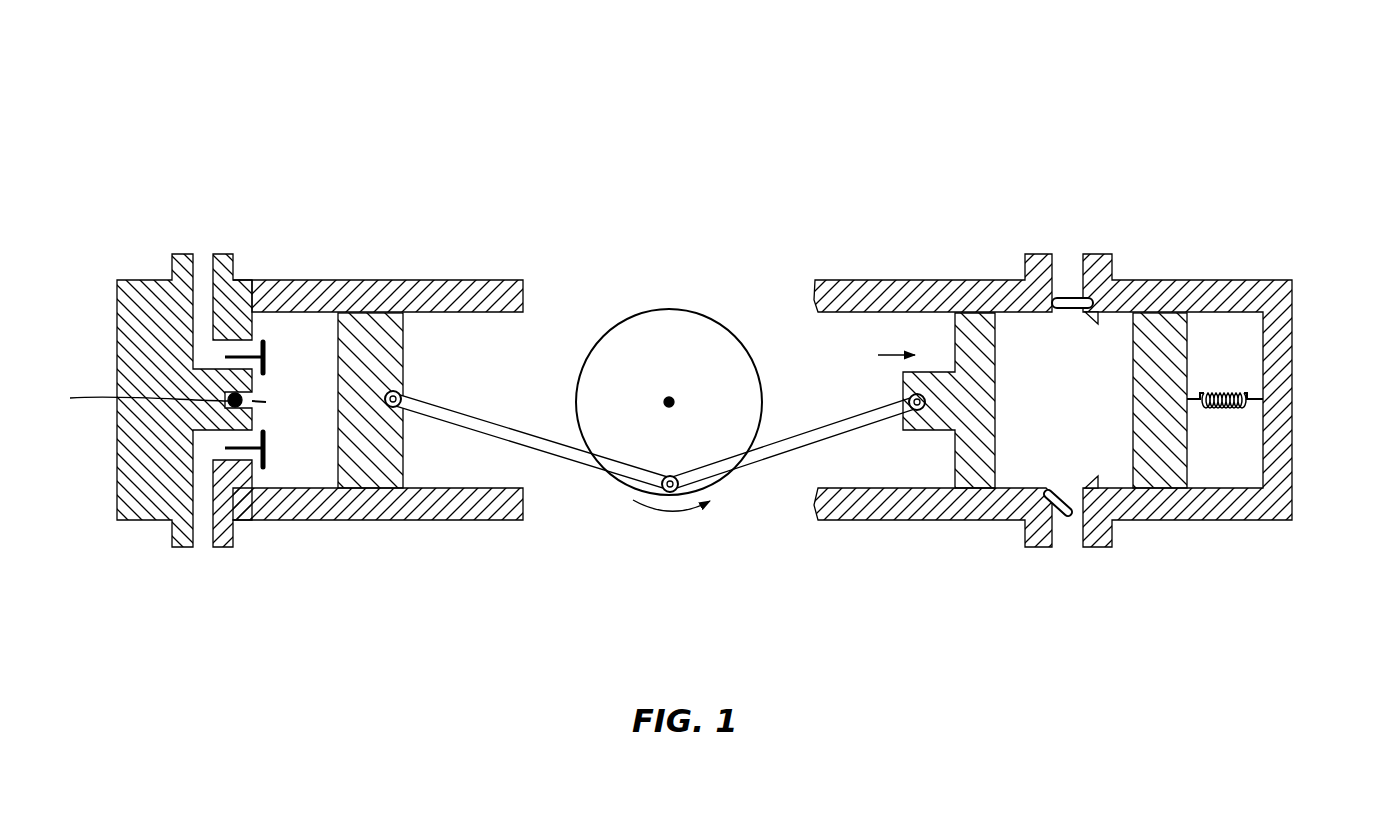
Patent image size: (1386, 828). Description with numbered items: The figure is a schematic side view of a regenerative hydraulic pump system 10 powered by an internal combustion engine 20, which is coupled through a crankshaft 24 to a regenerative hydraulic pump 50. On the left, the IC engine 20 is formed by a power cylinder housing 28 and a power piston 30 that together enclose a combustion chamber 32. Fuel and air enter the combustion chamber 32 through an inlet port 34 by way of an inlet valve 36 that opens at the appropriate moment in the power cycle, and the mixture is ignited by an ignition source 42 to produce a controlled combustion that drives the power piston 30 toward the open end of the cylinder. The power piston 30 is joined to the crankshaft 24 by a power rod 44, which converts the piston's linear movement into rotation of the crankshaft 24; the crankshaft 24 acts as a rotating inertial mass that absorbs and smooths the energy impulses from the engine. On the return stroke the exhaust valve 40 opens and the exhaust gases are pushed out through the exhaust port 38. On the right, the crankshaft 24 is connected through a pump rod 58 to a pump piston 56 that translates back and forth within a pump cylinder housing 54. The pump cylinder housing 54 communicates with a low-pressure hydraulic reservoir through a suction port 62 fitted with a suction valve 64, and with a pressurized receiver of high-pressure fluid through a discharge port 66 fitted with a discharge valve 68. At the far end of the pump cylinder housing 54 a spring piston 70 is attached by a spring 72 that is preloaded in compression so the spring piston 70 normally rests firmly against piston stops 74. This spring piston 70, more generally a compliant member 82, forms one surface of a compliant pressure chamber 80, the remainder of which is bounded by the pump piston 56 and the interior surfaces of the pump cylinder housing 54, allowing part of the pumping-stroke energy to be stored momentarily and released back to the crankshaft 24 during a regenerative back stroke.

The regenerative hydraulic pump system 10 is at (775, 106).
The internal combustion engine 20 is at (360, 170).
The crankshaft 24 is at (680, 332).
The power cylinder housing 28 is at (455, 296).
The power piston 30 is at (388, 445).
The combustion chamber 32 is at (300, 470).
The inlet port 34 is at (232, 350).
The inlet valve 36 is at (266, 345).
The exhaust port 38 is at (215, 450).
The exhaust valve 40 is at (268, 455).
The ignition source 42 is at (228, 401).
The power rod 44 is at (557, 447).
The regenerative hydraulic pump 50 is at (1288, 156).
The pump cylinder housing 54 is at (900, 293).
The pump piston 56 is at (963, 458).
The pump rod 58 is at (790, 440).
The suction port 62 is at (1064, 264).
The suction valve 64 is at (1071, 298).
The discharge port 66 is at (1075, 530).
The discharge valve 68 is at (1062, 525).
The spring piston 70 is at (1172, 362).
The spring 72 is at (1228, 408).
The piston stops 74 is at (1095, 480).
The compliant pressure chamber 80 is at (1075, 385).
The compliant member 82 is at (1175, 448).